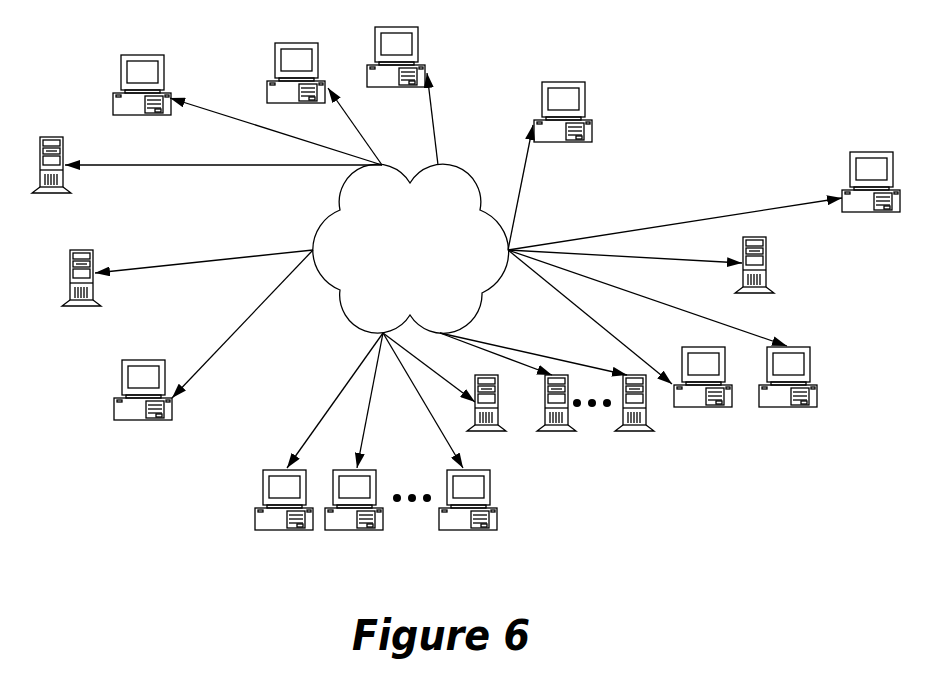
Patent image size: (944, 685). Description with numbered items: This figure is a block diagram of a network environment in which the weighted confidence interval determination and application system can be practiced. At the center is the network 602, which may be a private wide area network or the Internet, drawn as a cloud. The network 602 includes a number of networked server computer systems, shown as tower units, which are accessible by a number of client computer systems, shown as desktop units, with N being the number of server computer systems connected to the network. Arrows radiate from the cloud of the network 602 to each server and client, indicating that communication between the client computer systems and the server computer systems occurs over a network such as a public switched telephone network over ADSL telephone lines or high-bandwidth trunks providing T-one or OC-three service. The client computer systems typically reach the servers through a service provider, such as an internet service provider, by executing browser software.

The network 602 is at (411, 248).